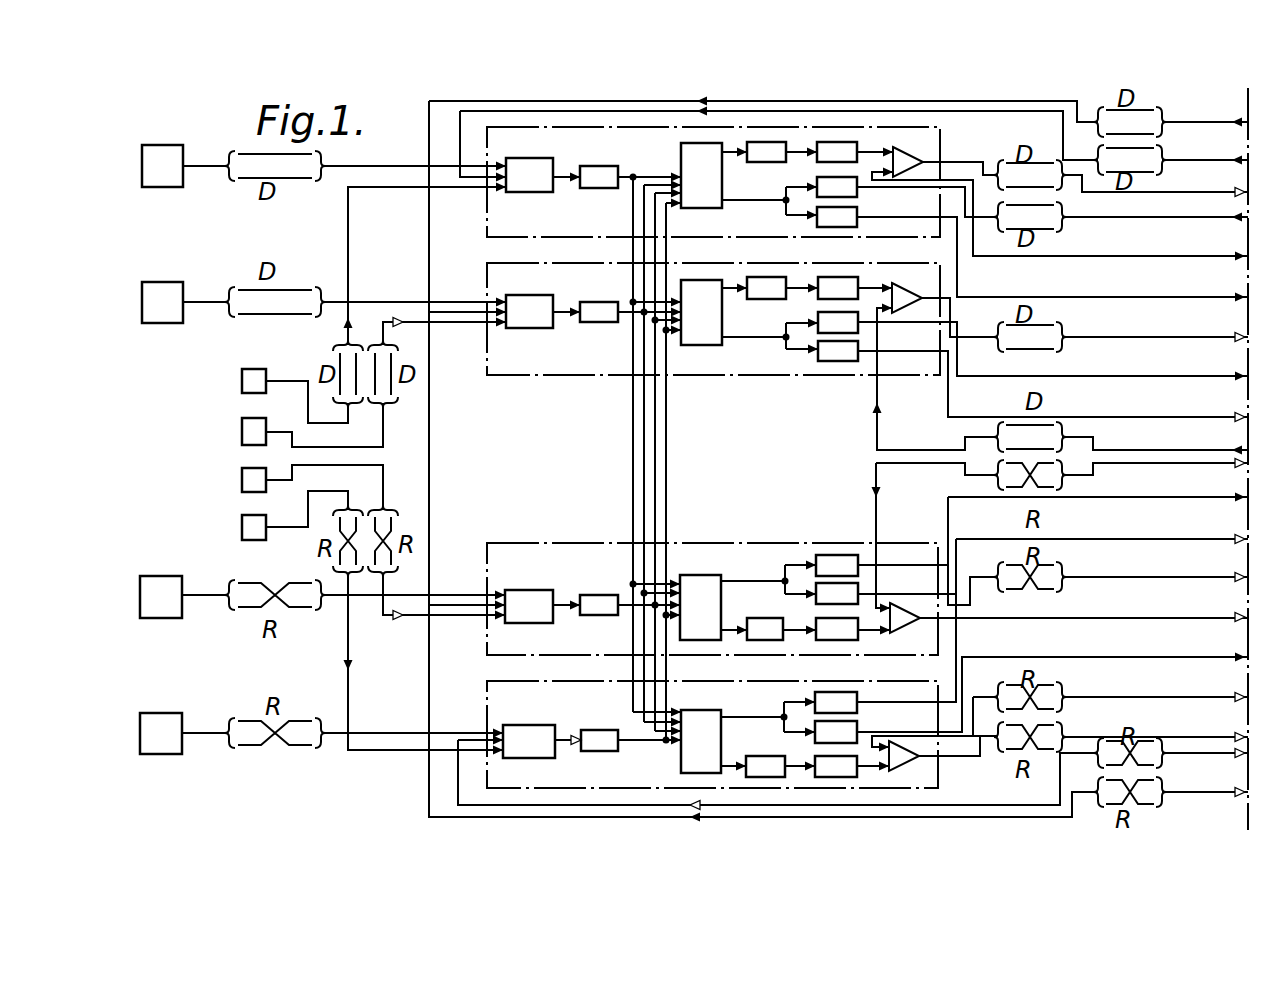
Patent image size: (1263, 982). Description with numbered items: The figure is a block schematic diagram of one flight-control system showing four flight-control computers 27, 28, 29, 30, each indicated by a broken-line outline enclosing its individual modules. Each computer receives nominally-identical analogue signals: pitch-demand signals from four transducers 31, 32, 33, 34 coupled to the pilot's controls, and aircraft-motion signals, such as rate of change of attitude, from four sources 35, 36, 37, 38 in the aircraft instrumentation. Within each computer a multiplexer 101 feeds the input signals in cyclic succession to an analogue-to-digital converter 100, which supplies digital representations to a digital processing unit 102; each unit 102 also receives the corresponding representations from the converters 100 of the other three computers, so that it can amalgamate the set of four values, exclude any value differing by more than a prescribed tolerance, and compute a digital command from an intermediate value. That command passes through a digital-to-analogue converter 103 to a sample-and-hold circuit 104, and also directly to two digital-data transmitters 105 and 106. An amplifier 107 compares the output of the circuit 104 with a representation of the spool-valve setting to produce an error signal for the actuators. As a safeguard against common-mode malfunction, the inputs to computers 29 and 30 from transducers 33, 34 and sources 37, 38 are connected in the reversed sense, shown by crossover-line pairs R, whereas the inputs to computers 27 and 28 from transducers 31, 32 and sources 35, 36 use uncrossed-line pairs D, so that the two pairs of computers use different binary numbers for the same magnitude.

The flight-control computer 27 is at (487, 232).
The flight-control computer 28 is at (500, 270).
The flight-control computer 29 is at (573, 522).
The flight-control computer 30 is at (492, 705).
The transducer 31 is at (242, 385).
The transducer 32 is at (242, 433).
The transducer 33 is at (242, 481).
The transducer 34 is at (242, 532).
The source 35 is at (168, 187).
The source 36 is at (190, 272).
The source 37 is at (185, 563).
The source 38 is at (185, 700).
The analogue-to-digital converter 100 is at (608, 190).
The multiplexer 101 is at (548, 192).
The digital processing unit 102 is at (681, 155).
The digital-to-analogue converter 103 is at (755, 162).
The sample-and-hold circuit 104 is at (817, 160).
The digital-data transmitter 105 is at (857, 190).
The digital-data transmitter 106 is at (817, 215).
The amplifier 107 is at (912, 155).